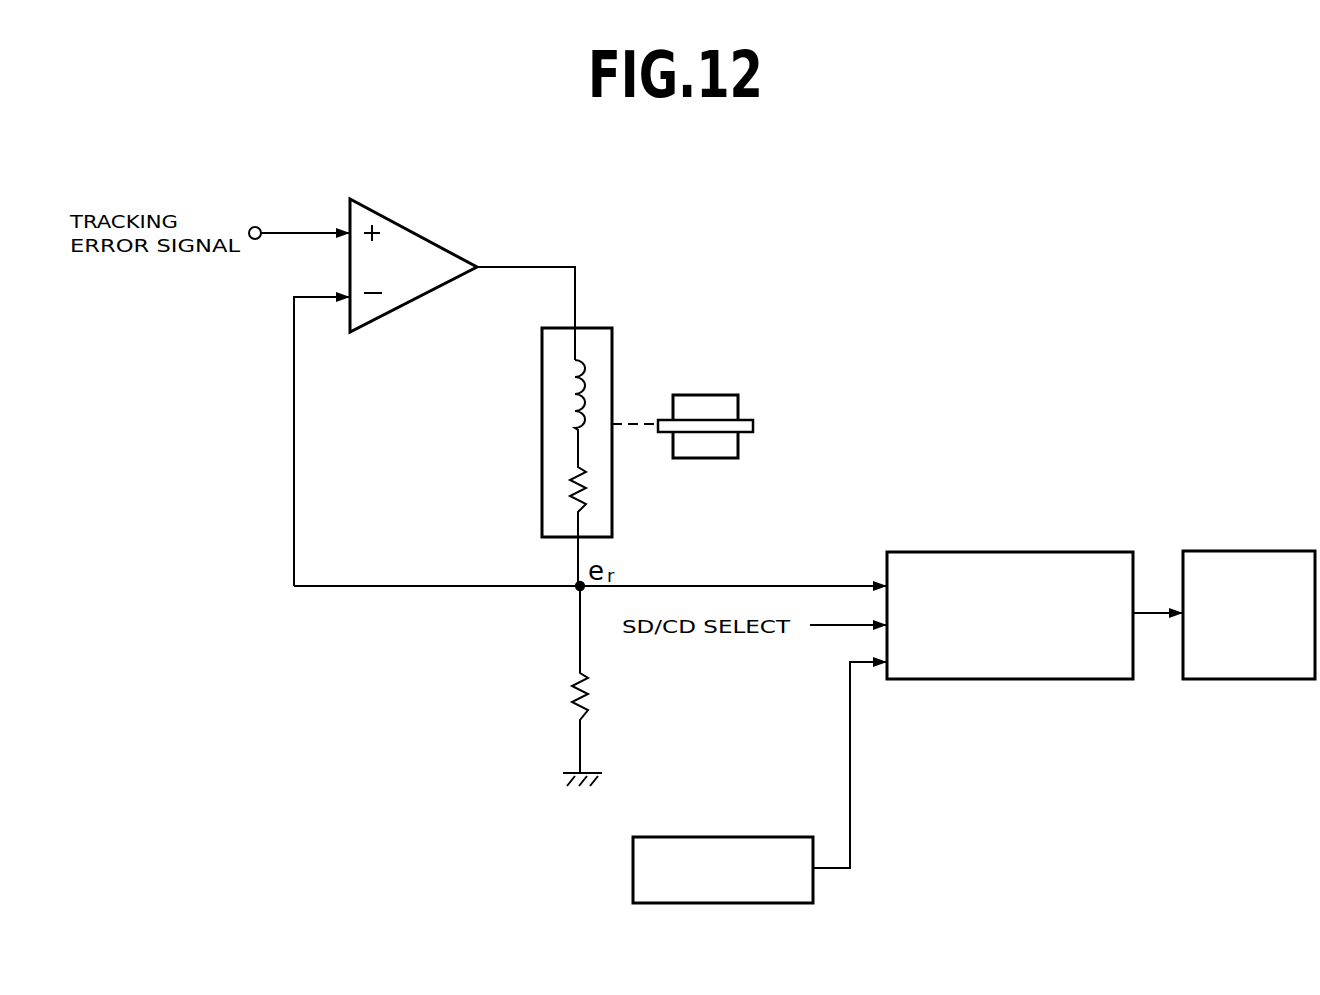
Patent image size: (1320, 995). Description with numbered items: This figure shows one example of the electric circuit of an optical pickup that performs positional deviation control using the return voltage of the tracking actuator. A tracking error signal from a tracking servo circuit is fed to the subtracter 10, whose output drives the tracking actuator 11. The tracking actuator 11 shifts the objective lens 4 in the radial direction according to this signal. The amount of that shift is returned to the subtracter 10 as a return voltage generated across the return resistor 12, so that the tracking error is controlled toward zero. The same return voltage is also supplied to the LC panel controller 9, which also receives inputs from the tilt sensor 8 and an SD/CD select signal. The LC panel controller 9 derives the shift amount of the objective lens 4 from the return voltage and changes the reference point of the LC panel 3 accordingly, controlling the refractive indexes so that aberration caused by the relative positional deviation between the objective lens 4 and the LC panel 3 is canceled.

The subtracter 10 is at (425, 240).
The tracking actuator 11 is at (592, 328).
The objective lens 4 is at (716, 395).
The return resistor 12 is at (576, 689).
The LC panel controller 9 is at (1080, 552).
The LC panel 3 is at (1287, 551).
The tilt sensor 8 is at (772, 837).